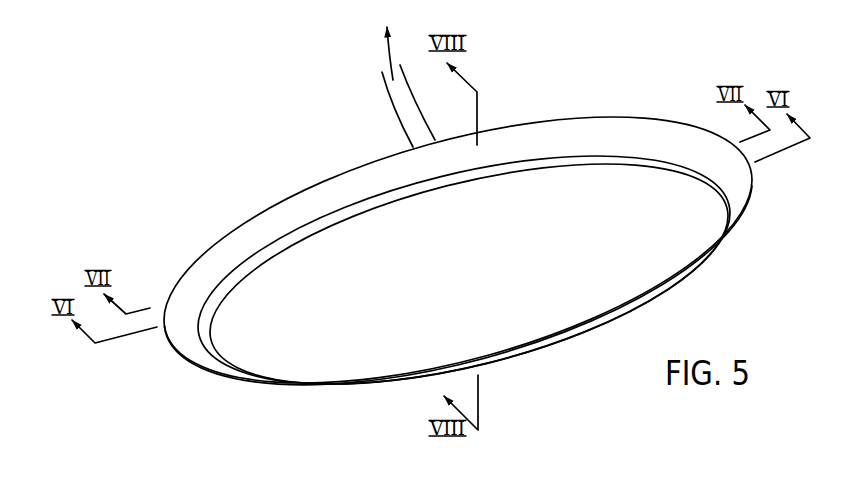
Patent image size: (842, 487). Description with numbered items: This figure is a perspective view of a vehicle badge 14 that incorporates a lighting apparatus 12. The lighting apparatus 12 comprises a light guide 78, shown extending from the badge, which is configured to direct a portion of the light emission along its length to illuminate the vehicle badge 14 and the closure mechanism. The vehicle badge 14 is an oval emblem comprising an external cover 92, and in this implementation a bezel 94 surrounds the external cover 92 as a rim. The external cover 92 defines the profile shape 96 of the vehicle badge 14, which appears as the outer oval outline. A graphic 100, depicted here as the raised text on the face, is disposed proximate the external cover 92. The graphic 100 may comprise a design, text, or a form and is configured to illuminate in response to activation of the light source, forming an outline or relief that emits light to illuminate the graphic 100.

The lighting apparatus 12 is at (288, 171).
The vehicle badge 14 is at (613, 76).
The light guide 78 is at (392, 103).
The external cover 92 is at (693, 238).
The bezel 94 is at (737, 181).
The profile shape 96 is at (283, 394).
The graphic 100 is at (305, 327).